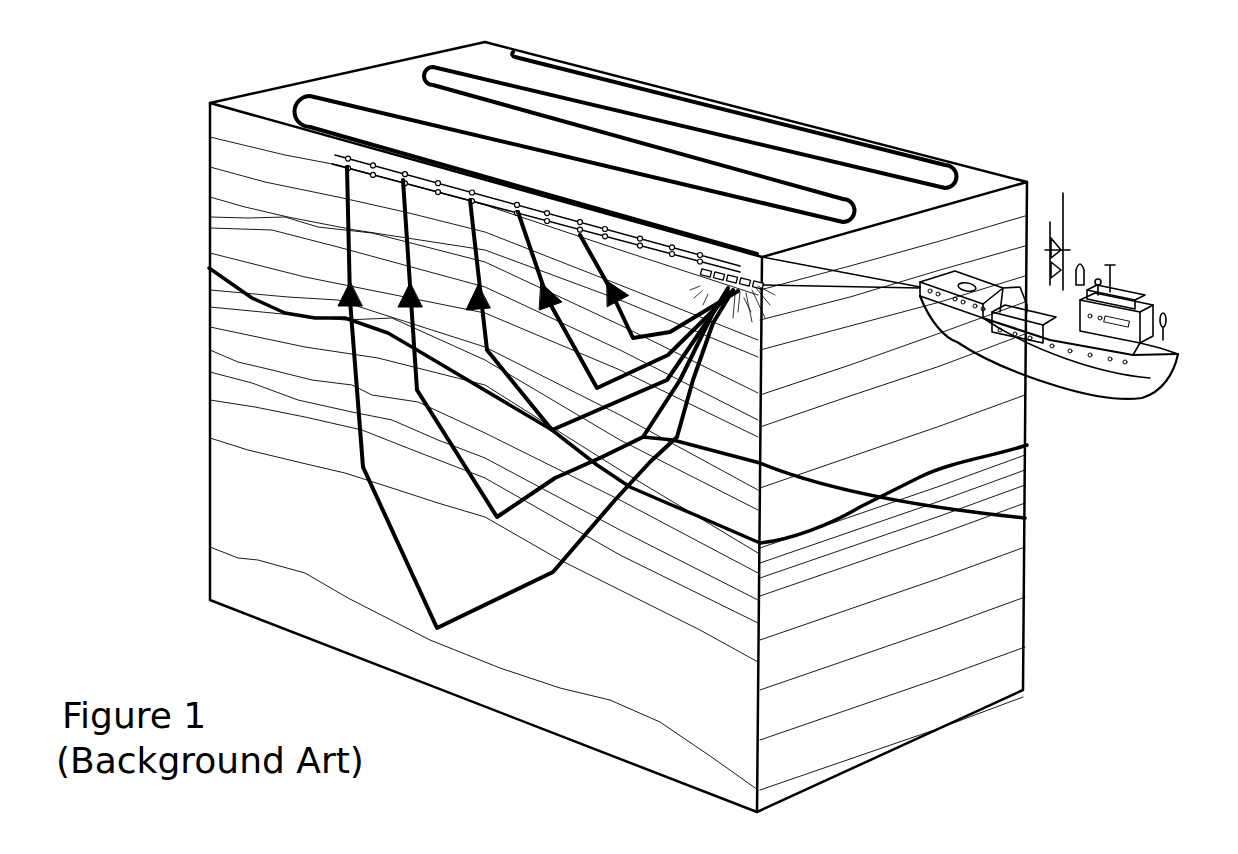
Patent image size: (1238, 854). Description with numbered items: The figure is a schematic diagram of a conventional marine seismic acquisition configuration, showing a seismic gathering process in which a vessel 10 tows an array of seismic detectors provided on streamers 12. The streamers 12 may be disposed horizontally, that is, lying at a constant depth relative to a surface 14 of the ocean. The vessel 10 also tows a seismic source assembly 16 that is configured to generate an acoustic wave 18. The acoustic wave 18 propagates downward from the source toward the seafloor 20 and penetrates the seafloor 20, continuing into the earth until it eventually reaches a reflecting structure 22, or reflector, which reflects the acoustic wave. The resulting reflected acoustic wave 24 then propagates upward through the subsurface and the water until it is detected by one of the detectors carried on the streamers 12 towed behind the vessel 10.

The vessel 10 is at (1140, 290).
The streamers 12 is at (540, 192).
The surface of the ocean 14 is at (383, 82).
The seismic source assembly 16 is at (743, 268).
The acoustic wave 18 is at (1023, 518).
The seafloor 20 is at (983, 446).
The reflecting structure 22 is at (308, 443).
The reflected acoustic wave 24 is at (350, 365).